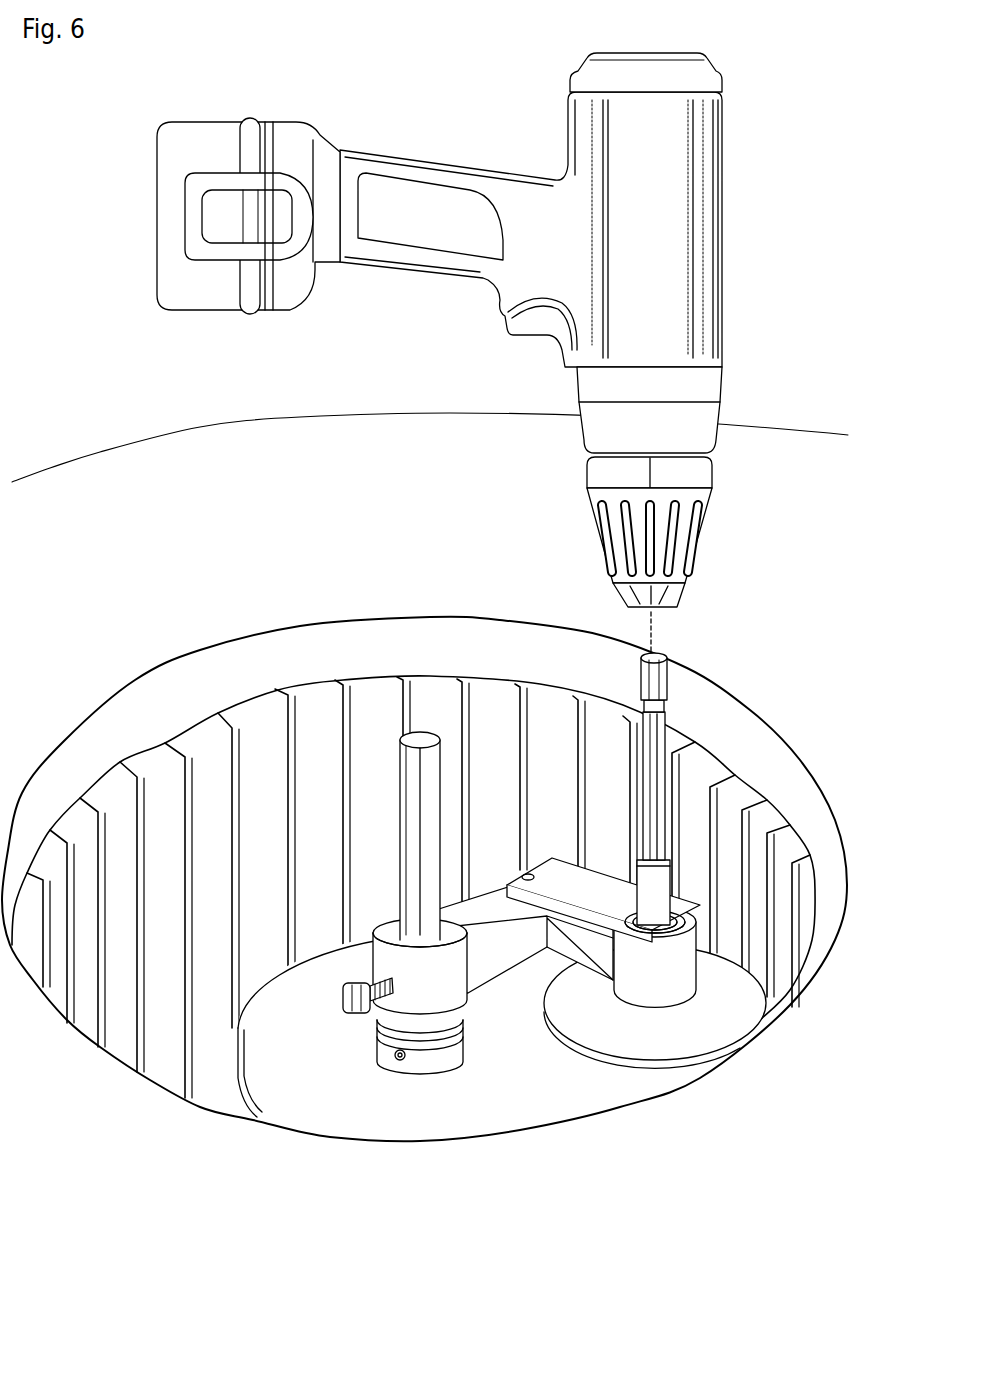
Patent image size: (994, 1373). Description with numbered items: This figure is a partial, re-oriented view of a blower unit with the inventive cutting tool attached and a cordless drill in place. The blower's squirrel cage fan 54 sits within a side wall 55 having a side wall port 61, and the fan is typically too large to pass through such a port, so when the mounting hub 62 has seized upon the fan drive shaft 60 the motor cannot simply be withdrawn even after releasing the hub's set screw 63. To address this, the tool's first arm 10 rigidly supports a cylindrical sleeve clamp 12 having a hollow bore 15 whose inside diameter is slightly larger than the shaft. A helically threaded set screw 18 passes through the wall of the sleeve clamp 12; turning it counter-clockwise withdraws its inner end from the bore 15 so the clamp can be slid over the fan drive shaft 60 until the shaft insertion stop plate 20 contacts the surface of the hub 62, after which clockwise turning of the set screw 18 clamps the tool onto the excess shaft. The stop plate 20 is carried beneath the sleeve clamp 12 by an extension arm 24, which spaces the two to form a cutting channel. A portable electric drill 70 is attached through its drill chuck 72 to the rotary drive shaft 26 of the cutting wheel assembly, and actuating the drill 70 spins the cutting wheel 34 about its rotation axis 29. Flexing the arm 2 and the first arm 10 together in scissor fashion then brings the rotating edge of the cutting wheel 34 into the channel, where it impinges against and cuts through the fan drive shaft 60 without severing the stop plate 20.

The arm 2 is at (595, 893).
The first arm 10 is at (508, 944).
The sleeve clamp 12 is at (437, 980).
The hollow bore 15 is at (385, 927).
The set screw 18 is at (352, 1002).
The shaft insertion stop plate 20 is at (463, 1033).
The extension arm 24 is at (335, 955).
The rotary drive shaft 26 is at (660, 810).
The rotation axis 29 is at (657, 630).
The cutting wheel 34 is at (668, 1027).
The squirrel cage fan 54 is at (148, 842).
The side wall 55 is at (200, 627).
The fan drive shaft 60 is at (420, 735).
The side wall port 61 is at (290, 650).
The mounting hub 62 is at (453, 1060).
The set screw 63 is at (397, 1060).
The portable electric drill 70 is at (740, 235).
The drill chuck 72 is at (688, 537).